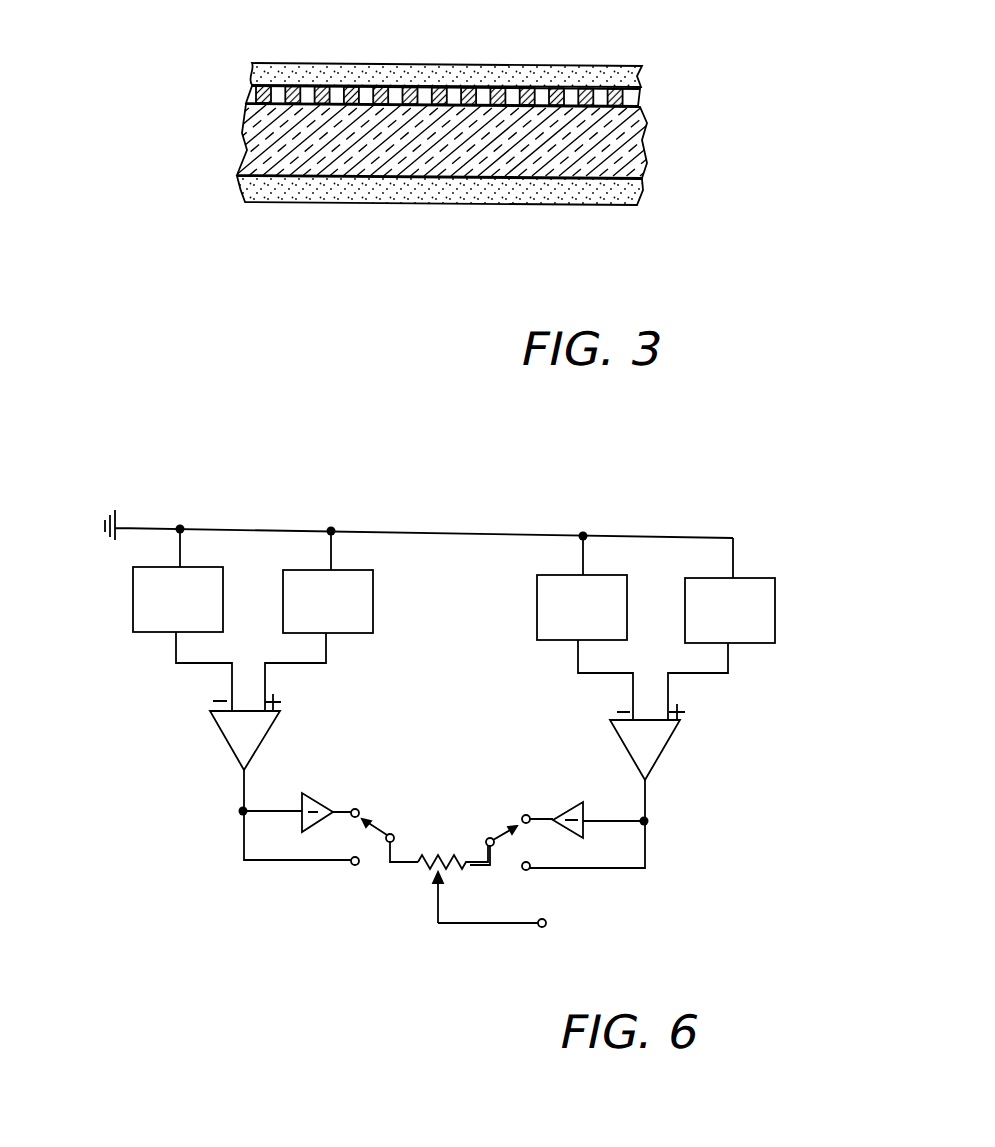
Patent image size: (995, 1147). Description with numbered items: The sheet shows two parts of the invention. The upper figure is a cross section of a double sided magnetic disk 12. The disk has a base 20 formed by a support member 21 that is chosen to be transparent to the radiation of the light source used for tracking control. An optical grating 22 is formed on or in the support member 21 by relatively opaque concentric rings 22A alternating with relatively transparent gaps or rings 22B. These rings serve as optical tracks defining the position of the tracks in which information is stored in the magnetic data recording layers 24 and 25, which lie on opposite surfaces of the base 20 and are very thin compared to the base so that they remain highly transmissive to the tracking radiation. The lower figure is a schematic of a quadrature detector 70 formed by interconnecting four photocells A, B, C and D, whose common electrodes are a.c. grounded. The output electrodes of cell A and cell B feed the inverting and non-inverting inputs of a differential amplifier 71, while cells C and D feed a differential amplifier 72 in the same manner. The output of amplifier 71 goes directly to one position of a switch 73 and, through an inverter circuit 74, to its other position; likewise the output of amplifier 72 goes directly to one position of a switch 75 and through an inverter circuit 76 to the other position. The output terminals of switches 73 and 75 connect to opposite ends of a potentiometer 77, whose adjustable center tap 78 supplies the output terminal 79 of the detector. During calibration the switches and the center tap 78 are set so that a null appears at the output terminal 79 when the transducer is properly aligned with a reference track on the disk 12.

In FIG. 3, the disk 12 is at (467, 253).
In FIG. 3, the base 20 is at (253, 85).
In FIG. 3, the support member 21 is at (642, 142).
In FIG. 3, the optical grating 22 is at (485, 57).
In FIG. 3, the opaque concentric rings 22A is at (321, 86).
In FIG. 3, the transparent gaps or rings 22B is at (455, 91).
In FIG. 3, the magnetic data recording layer 24 is at (637, 75).
In FIG. 3, the magnetic data recording layer 25 is at (640, 190).
In FIG. 6, the quadrature detector 70 is at (494, 978).
In FIG. 6, the differential amplifier 71 is at (258, 749).
In FIG. 6, the differential amplifier 72 is at (622, 745).
In FIG. 6, the switch 73 is at (380, 826).
In FIG. 6, the inverter circuit 74 is at (323, 800).
In FIG. 6, the switch 75 is at (495, 826).
In FIG. 6, the inverter circuit 76 is at (567, 803).
In FIG. 6, the potentiometer 77 is at (438, 855).
In FIG. 6, the adjustable center tap 78 is at (435, 882).
In FIG. 6, the output terminal 79 is at (546, 921).